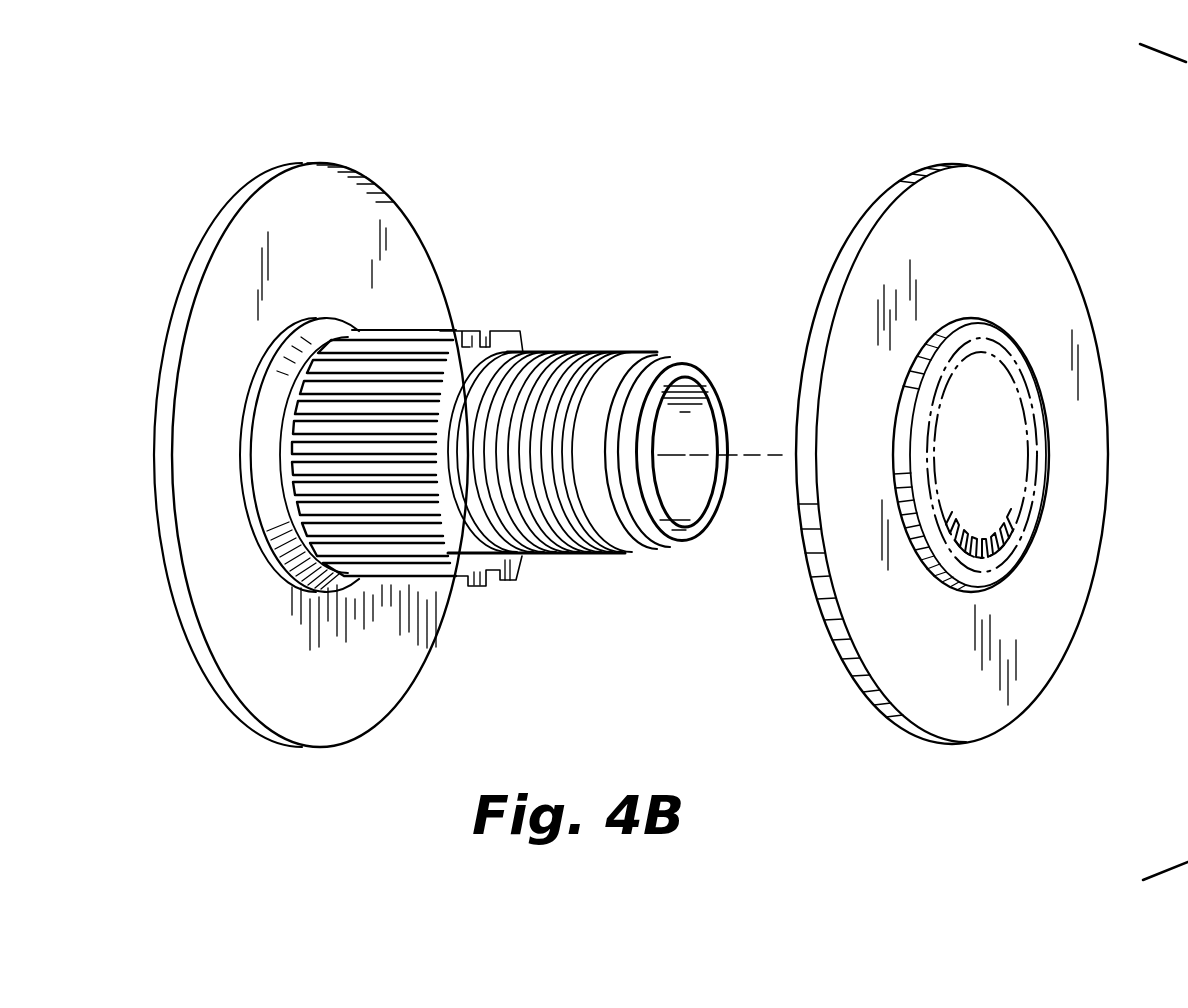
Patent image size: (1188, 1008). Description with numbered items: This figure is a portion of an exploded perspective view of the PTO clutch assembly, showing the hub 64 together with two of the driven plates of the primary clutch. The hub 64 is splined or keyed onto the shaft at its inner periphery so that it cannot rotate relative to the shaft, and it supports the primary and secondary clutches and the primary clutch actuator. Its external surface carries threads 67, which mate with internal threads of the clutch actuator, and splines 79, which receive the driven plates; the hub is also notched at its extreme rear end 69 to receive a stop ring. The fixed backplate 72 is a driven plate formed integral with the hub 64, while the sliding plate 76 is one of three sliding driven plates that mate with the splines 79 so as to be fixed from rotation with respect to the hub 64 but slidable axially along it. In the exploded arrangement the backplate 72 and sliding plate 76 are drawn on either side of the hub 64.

The hub 64 is at (510, 431).
The threads 67 is at (578, 347).
The extreme rear end 69 is at (660, 549).
The fixed backplate 72 is at (335, 180).
The sliding plate 76 is at (1033, 253).
The splines 79 is at (457, 586).